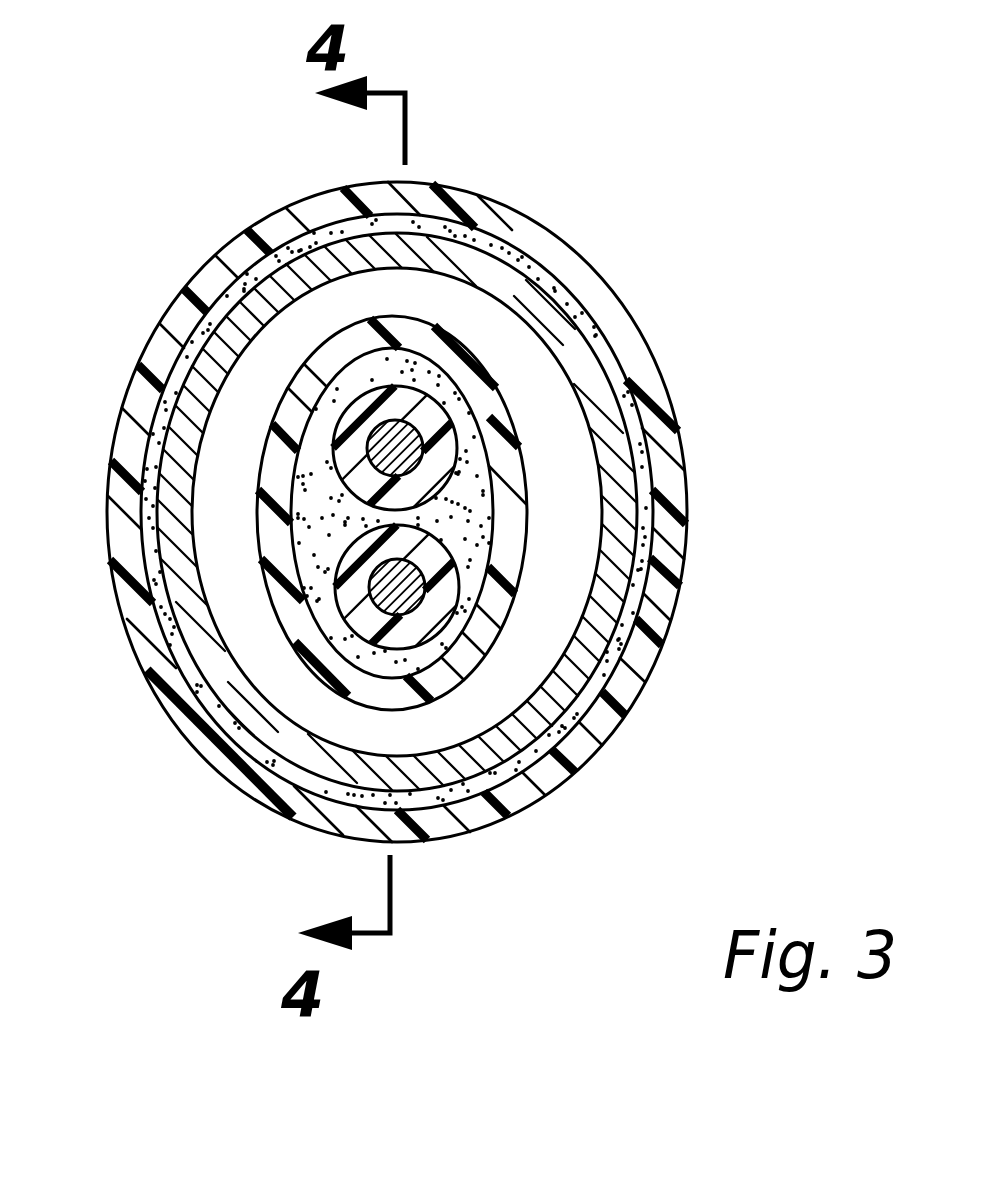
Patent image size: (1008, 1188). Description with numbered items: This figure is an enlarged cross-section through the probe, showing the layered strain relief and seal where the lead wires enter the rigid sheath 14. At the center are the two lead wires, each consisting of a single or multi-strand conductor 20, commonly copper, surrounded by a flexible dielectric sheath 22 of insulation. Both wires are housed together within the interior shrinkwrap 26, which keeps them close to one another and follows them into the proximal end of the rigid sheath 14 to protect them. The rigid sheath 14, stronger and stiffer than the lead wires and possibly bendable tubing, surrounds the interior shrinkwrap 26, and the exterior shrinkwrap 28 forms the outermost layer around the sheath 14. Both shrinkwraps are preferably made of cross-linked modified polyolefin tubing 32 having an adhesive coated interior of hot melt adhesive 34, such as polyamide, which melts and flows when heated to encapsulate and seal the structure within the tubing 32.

The rigid sheath 14 is at (565, 573).
The conductor 20 is at (368, 588).
The flexible dielectric sheath 22 is at (345, 560).
The interior shrinkwrap 26 is at (331, 356).
The exterior shrinkwrap 28 is at (627, 292).
The cross-linked modified polyolefin tubing 32 is at (307, 472).
The hot melt adhesive 34 is at (310, 473).